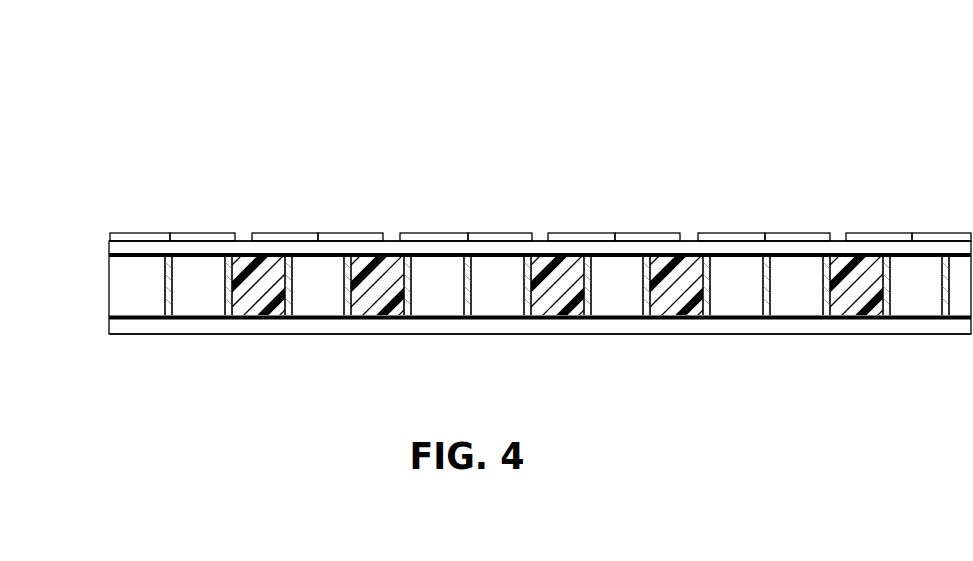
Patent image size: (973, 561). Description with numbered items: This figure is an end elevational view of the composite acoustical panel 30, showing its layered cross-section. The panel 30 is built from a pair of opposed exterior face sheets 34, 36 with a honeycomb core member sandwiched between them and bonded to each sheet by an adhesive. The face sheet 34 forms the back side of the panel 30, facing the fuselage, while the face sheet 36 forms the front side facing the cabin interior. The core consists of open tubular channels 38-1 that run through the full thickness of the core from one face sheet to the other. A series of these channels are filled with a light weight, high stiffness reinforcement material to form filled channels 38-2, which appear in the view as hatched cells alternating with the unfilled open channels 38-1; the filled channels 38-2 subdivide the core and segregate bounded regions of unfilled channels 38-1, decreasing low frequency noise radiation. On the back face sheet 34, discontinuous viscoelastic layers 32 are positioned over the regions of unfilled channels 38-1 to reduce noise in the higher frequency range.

The composite acoustical panel 30 is at (876, 122).
The discontinuous viscoelastic layers 32 is at (415, 238).
The face sheet 34 is at (142, 250).
The face sheet 36 is at (232, 327).
The open tubular channels 38-1 is at (501, 290).
The filled channels 38-2 is at (272, 310).